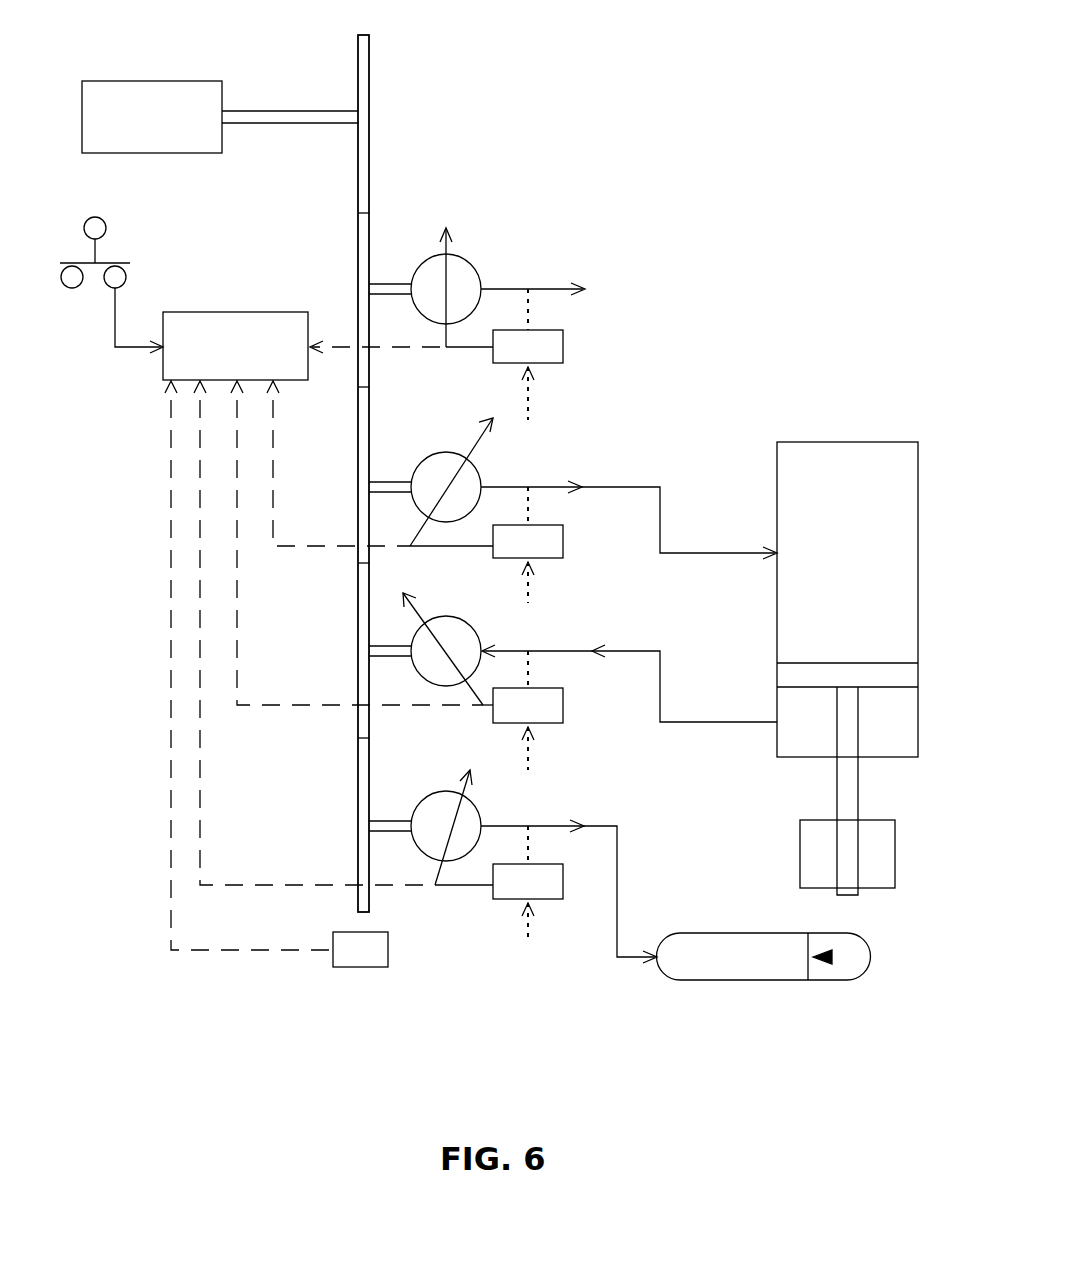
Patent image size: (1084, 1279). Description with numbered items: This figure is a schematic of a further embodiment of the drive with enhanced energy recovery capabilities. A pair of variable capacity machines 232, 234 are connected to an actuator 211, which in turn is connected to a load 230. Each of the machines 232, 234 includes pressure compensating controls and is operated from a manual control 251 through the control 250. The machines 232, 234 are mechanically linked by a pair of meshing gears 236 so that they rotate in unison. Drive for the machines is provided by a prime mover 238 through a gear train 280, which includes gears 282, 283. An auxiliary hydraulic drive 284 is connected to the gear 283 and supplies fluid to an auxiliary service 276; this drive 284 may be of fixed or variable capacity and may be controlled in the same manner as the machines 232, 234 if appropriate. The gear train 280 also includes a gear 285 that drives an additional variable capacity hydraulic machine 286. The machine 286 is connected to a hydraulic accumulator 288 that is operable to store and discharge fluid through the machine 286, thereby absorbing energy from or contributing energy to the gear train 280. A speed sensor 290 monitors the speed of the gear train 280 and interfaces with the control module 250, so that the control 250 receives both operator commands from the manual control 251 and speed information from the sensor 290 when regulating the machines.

The gear train 280 is at (362, 32).
The gear 282 is at (371, 124).
The gear 283 is at (366, 241).
The meshing gears 236 is at (366, 428).
The gear 285 is at (365, 757).
The prime mover 238 is at (155, 145).
The manual control 251 is at (108, 220).
The control 250 is at (237, 312).
The auxiliary hydraulic drive 284 is at (463, 270).
The auxiliary service 276 is at (550, 286).
The variable capacity machine 232 is at (475, 478).
The variable capacity machine 234 is at (458, 632).
The variable capacity hydraulic machine 286 is at (467, 811).
The speed sensor 290 is at (362, 960).
The actuator 211 is at (920, 728).
The load 230 is at (887, 880).
The hydraulic accumulator 288 is at (727, 950).